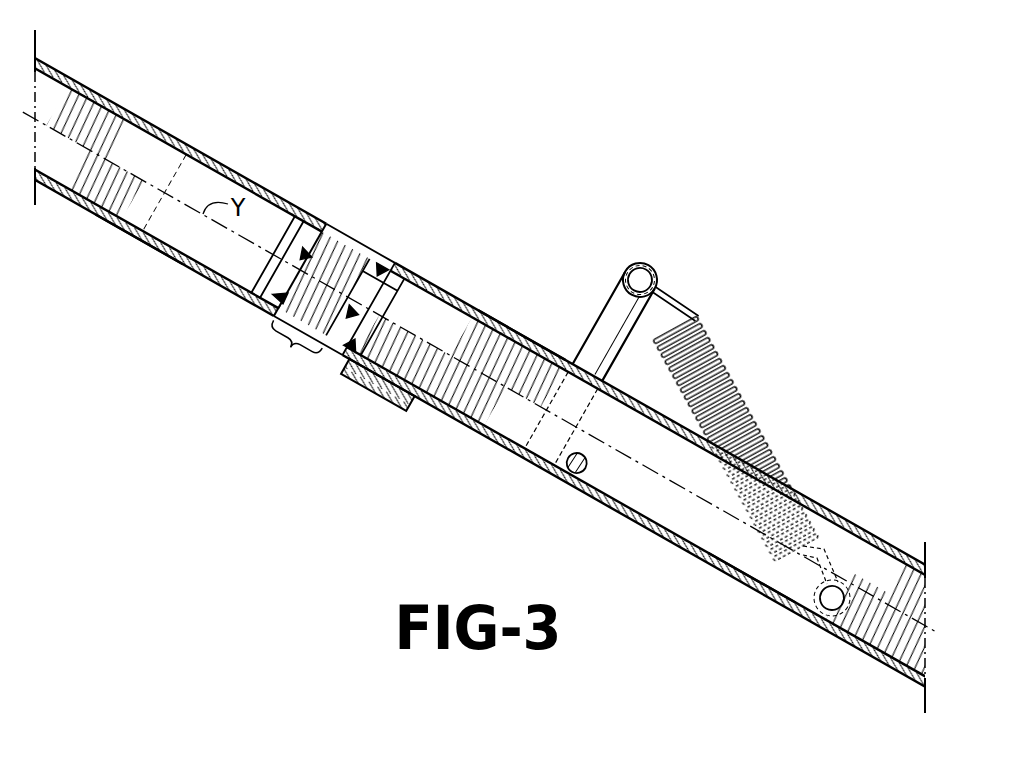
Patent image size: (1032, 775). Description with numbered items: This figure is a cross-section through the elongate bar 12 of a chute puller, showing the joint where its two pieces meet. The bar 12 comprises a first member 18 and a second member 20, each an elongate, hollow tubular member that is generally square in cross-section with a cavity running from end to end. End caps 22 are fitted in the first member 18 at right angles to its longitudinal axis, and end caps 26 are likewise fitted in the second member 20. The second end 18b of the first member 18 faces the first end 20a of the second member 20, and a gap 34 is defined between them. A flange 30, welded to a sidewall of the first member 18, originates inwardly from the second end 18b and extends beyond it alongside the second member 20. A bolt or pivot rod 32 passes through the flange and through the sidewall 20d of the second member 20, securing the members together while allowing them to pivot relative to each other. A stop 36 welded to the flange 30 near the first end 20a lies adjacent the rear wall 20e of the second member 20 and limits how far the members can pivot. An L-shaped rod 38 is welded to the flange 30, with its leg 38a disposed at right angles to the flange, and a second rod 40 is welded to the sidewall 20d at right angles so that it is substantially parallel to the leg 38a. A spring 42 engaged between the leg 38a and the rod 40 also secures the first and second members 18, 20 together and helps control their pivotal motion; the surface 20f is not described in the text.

The elongate bar 12 is at (163, 256).
The first member 18 is at (175, 136).
The second end 18b is at (292, 215).
The second member 20 is at (688, 552).
The first end 20a is at (458, 297).
The sidewall 20d is at (752, 558).
The rear wall 20e is at (462, 425).
The outer surface of second tube 20f is at (512, 328).
The end caps 22 is at (262, 276).
The end caps 26 is at (390, 300).
The flange 30 is at (352, 248).
The bolt or pivot rod 32 is at (570, 476).
The gap 34 is at (327, 310).
The stop 36 is at (386, 397).
The L-shaped rod 38 is at (596, 315).
The leg 38a is at (641, 272).
The second rod 40 is at (832, 600).
The spring 42 is at (730, 371).